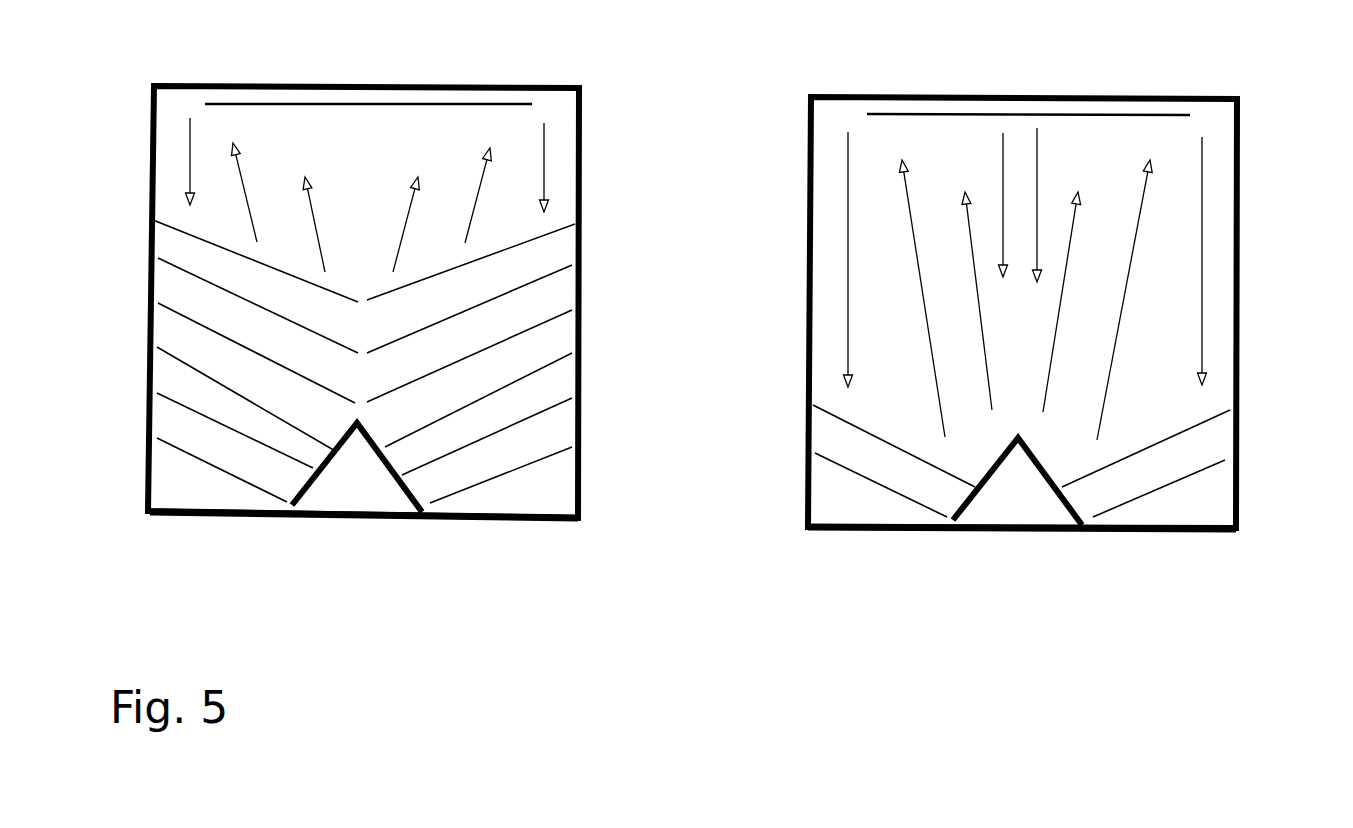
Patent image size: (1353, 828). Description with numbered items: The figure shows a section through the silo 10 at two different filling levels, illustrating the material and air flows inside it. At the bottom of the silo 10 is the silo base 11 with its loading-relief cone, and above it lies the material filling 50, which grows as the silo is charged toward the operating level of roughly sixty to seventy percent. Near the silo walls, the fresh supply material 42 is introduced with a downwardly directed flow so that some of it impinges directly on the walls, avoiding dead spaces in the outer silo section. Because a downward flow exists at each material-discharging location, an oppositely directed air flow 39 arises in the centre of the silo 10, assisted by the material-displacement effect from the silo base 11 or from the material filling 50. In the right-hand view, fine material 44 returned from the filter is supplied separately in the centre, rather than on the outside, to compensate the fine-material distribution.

The silo 10 is at (580, 483).
The silo base 11 is at (207, 517).
The air flow 39 is at (248, 200).
The material 42 is at (188, 150).
The fine material 44 is at (1003, 147).
The material filling 50 is at (447, 272).